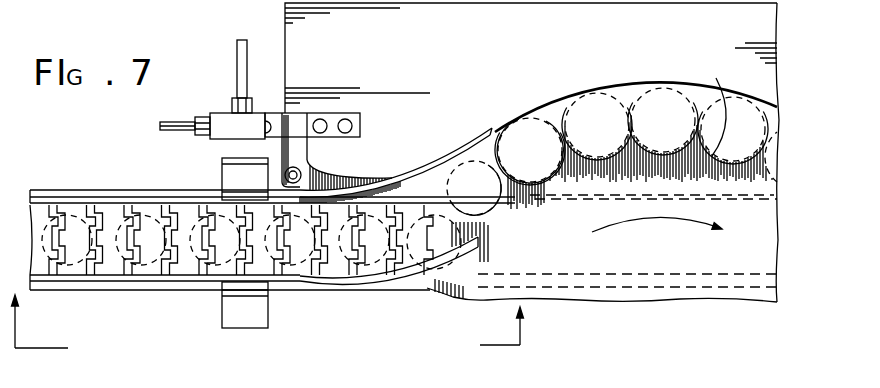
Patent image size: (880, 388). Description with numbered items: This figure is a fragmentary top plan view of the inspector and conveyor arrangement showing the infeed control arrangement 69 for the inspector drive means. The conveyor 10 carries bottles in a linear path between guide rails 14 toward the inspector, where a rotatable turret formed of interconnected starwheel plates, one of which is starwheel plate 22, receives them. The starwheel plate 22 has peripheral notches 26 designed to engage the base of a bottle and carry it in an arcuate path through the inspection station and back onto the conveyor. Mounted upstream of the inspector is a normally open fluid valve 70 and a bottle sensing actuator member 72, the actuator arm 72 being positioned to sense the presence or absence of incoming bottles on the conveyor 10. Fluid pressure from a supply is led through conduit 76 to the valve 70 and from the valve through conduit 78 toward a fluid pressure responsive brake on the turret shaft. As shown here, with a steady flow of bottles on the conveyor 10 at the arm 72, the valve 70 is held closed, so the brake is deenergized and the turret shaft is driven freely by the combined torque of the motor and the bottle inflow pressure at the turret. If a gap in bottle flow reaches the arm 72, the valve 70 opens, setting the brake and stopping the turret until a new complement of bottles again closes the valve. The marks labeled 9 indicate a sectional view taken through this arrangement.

The conveyor 10 is at (183, 258).
The guide rails 14 is at (72, 200).
The starwheel plate 22 is at (672, 266).
The peripheral notches 26 is at (514, 130).
The infeed control arrangement 69 is at (417, 100).
The fluid valve 70 is at (257, 118).
The bottle sensing actuator member 72 is at (342, 180).
The conduit 76 is at (173, 128).
The conduit 78 is at (237, 50).
The section line 9- 9 is at (268, 341).